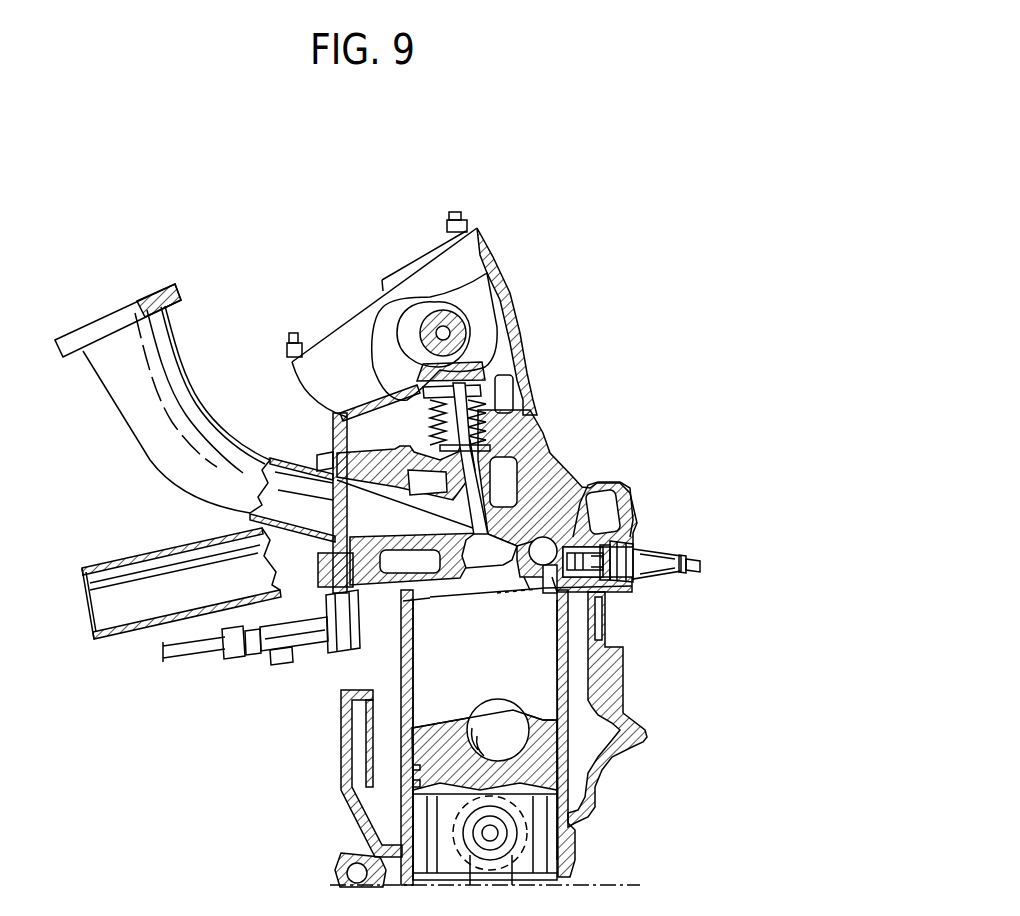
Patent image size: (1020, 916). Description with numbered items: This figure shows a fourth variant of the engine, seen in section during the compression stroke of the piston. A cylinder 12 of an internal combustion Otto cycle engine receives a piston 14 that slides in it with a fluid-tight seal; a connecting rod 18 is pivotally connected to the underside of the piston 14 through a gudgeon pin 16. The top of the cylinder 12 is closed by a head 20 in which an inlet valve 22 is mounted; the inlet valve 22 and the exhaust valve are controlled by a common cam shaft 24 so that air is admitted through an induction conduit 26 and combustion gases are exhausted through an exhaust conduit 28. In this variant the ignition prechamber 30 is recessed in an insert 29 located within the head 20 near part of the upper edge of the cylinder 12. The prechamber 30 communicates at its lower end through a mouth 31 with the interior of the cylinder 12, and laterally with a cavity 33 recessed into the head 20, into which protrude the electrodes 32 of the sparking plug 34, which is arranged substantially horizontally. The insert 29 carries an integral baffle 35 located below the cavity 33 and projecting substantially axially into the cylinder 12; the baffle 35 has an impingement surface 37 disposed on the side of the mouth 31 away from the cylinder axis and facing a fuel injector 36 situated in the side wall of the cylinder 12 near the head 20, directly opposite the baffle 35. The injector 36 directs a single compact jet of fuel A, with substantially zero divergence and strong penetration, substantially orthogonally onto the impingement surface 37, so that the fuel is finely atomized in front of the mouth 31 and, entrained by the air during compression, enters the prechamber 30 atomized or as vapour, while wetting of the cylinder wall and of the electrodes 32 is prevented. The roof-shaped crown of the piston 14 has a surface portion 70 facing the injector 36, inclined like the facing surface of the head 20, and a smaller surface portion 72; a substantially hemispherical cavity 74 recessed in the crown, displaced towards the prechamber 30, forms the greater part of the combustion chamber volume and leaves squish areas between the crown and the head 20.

The cylinder 12 is at (430, 667).
The piston 14 is at (400, 762).
The gudgeon pin 16 is at (500, 835).
The connecting rod 18 is at (487, 870).
The head 20 is at (433, 597).
The inlet valve 22 is at (500, 527).
The cam shaft 24 is at (466, 332).
The induction conduit 26 is at (146, 428).
The exhaust conduit 28 is at (140, 573).
The insert 29 is at (577, 540).
The ignition prechamber 30 is at (548, 540).
The mouth 31 is at (527, 557).
The electrodes 32 is at (588, 542).
The cavity 33 is at (607, 587).
The sparking plug 34 is at (662, 550).
The baffle 35 is at (555, 592).
The fuel injector 36 is at (263, 647).
The impingement surface 37 is at (527, 588).
The surface portion 70 is at (443, 728).
The surface portion 72 is at (533, 711).
The cavity 74 is at (487, 745).
The jet of fuel A is at (470, 600).